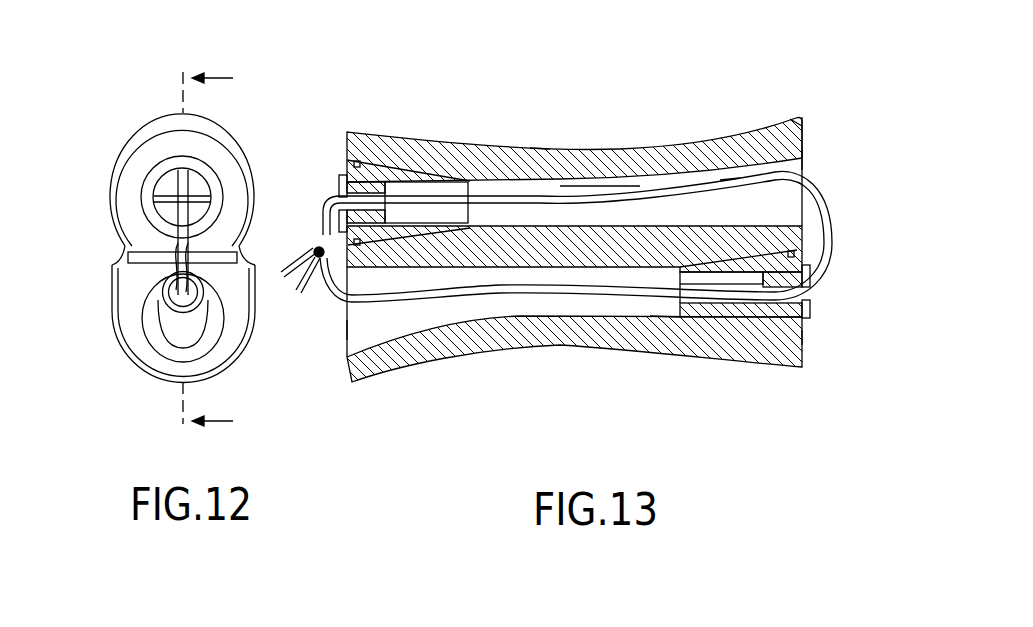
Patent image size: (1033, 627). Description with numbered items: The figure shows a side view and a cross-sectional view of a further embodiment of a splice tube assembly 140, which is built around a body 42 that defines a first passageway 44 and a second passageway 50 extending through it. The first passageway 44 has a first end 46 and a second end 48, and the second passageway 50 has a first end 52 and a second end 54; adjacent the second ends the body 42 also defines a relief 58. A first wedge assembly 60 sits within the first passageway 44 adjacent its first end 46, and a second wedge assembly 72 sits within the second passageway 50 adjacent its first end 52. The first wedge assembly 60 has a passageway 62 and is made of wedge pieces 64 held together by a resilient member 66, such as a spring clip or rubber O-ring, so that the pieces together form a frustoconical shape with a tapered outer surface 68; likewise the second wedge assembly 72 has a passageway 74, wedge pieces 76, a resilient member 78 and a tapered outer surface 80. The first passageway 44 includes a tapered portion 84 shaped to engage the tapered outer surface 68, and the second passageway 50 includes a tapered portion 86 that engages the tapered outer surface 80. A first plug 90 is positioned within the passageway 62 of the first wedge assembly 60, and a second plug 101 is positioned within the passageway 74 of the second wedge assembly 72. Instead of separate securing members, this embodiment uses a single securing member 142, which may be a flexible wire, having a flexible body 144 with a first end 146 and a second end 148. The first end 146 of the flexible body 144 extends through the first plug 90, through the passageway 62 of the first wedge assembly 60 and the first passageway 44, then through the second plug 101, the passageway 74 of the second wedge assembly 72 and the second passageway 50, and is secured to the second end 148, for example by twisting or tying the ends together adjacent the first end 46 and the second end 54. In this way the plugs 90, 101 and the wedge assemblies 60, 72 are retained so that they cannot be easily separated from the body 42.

In FIG. 12, the splice tube assembly 140 is at (105, 108).
In FIG. 13, the splice tube assembly 140 is at (694, 64).
In FIG. 12, the body 42 is at (235, 140).
In FIG. 13, the body 42 is at (592, 150).
In FIG. 13, the first passageway 44 is at (648, 184).
In FIG. 13, the first end 46 is at (354, 162).
In FIG. 13, the second end 48 is at (805, 160).
In FIG. 13, the second passageway 50 is at (556, 306).
In FIG. 13, the first end 52 is at (800, 335).
In FIG. 13, the second end 54 is at (347, 328).
In FIG. 12, the relief 58 is at (207, 352).
In FIG. 13, the relief 58 is at (805, 128).
In FIG. 12, the first wedge assembly 60 is at (175, 177).
In FIG. 13, the first wedge assembly 60 is at (412, 174).
In FIG. 13, the passageway 62 is at (462, 186).
In FIG. 13, the wedge pieces 64 is at (436, 178).
In FIG. 13, the resilient member 66 is at (350, 166).
In FIG. 13, the tapered outer surface 68 is at (410, 255).
In FIG. 13, the second wedge assembly 72 is at (767, 327).
In FIG. 13, the passageway 74 is at (720, 320).
In FIG. 13, the wedge pieces 76 is at (800, 232).
In FIG. 13, the resilient member 78 is at (812, 315).
In FIG. 13, the tapered outer surface 80 is at (685, 320).
In FIG. 13, the tapered portion 84 is at (540, 148).
In FIG. 13, the tapered portion 86 is at (670, 316).
In FIG. 12, the first plug 90 is at (172, 185).
In FIG. 13, the first plug 90 is at (340, 182).
In FIG. 13, the second plug 101 is at (812, 272).
In FIG. 12, the securing member 142 is at (168, 290).
In FIG. 13, the securing member 142 is at (735, 188).
In FIG. 12, the flexible body 144 is at (178, 209).
In FIG. 13, the flexible body 144 is at (702, 185).
In FIG. 12, the first end 146 is at (176, 283).
In FIG. 13, the first end 146 is at (282, 270).
In FIG. 12, the second end 148 is at (173, 288).
In FIG. 13, the second end 148 is at (300, 290).